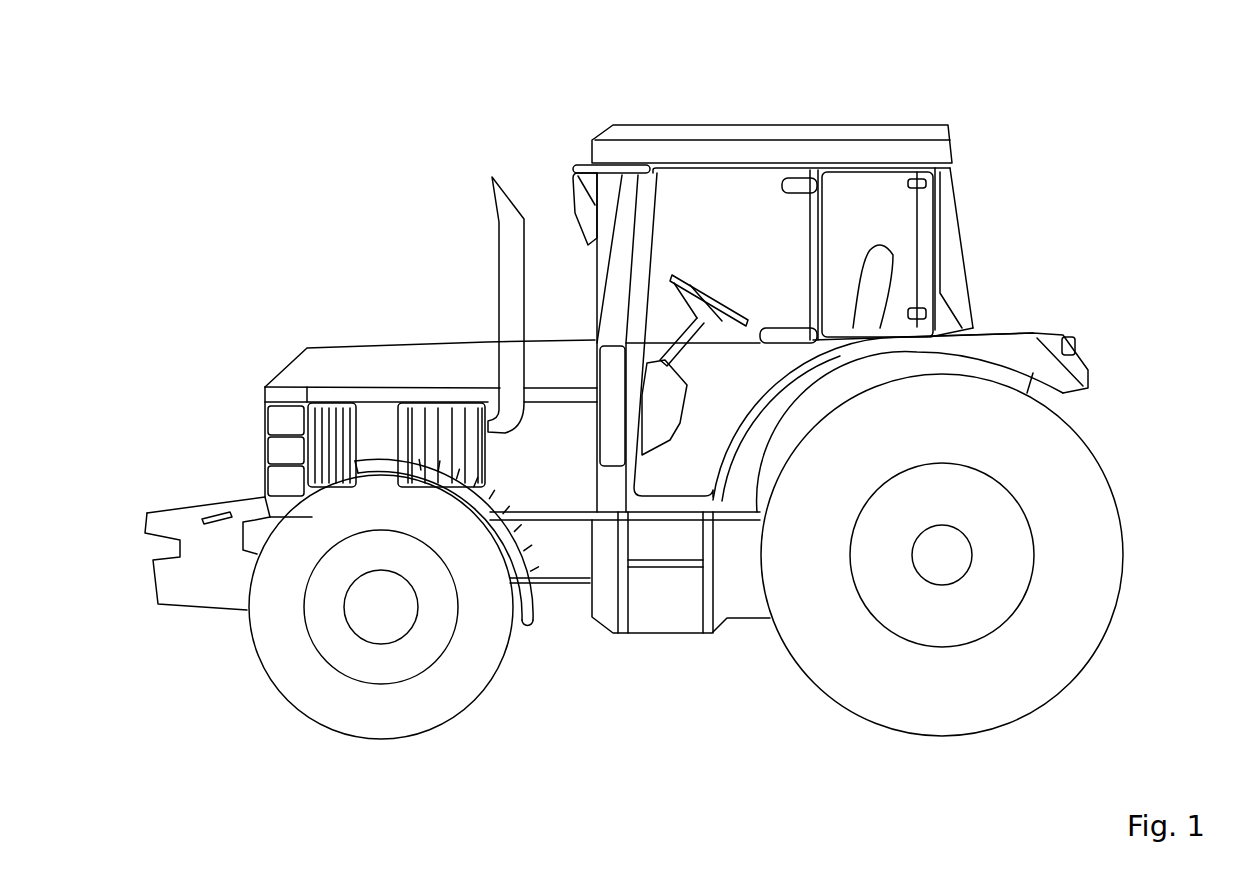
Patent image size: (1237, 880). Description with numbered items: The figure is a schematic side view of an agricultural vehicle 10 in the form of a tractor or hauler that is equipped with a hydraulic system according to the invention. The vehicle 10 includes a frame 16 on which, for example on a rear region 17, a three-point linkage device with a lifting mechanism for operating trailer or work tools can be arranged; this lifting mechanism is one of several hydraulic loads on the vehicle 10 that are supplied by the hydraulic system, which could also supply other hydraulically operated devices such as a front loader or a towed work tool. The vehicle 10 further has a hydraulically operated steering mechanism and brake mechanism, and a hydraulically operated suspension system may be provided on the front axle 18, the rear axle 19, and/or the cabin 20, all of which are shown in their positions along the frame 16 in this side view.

The agricultural vehicle 10 is at (522, 165).
The frame 16 is at (548, 550).
The rear region 17 is at (1158, 414).
The front axle 18 is at (220, 648).
The rear axle 19 is at (1108, 645).
The cabin 20 is at (715, 112).